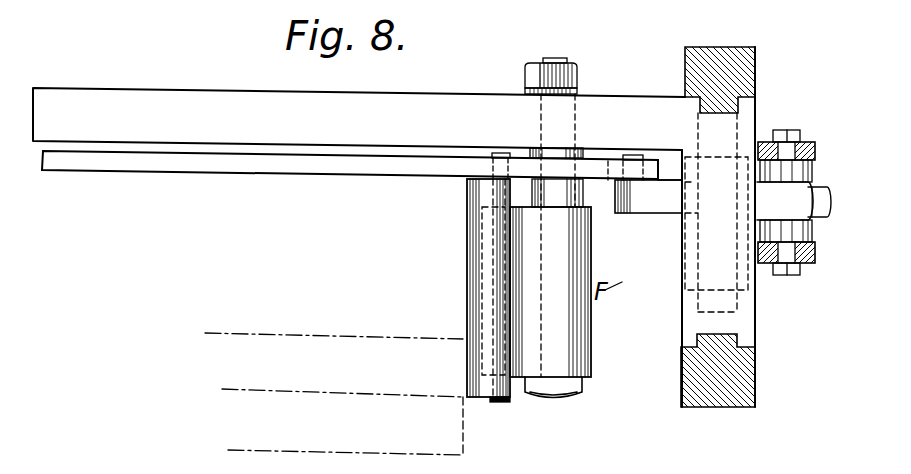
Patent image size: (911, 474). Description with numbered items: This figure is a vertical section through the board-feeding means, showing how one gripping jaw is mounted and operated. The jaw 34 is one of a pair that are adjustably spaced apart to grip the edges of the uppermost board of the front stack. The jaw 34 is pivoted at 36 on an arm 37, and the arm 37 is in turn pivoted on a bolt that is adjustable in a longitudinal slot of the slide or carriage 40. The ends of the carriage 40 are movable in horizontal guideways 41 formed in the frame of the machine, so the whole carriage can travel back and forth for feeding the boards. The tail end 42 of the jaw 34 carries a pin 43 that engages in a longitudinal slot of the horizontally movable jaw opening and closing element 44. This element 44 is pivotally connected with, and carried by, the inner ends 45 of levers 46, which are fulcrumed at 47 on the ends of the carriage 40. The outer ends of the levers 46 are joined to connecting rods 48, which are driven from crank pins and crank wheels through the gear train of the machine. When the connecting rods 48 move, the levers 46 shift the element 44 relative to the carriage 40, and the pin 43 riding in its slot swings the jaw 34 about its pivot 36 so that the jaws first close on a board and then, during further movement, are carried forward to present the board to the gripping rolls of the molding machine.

The jaw 34 is at (478, 270).
The pivot 36 is at (502, 399).
The arm 37 is at (530, 352).
The slide or carriage 40 is at (359, 119).
The horizontal guideways 41 is at (760, 80).
The tail end 42 is at (467, 203).
The pin 43 is at (541, 217).
The jaw opening and closing element 44 is at (338, 165).
The inner ends of levers 45 is at (634, 204).
The levers 46 is at (826, 218).
The fulcrum 47 is at (697, 256).
The connecting rods 48 is at (813, 147).